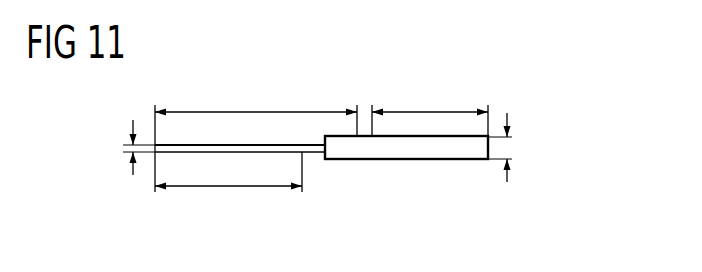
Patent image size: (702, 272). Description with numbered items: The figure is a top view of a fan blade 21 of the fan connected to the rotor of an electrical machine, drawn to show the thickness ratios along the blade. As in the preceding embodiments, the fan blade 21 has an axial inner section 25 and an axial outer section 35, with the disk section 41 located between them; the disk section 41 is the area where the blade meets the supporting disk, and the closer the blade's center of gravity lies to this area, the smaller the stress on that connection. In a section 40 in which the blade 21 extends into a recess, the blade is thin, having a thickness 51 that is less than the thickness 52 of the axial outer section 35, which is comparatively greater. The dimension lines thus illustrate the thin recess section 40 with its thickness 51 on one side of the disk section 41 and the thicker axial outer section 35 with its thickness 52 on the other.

The fan blade 21 is at (418, 151).
The axial inner section 25 is at (260, 111).
The axial outer section 35 is at (435, 107).
The section extending into recess 40 is at (228, 188).
The disk section 41 is at (365, 107).
The thickness of recess section 51 is at (132, 148).
The thickness of axial outer section 52 is at (505, 148).